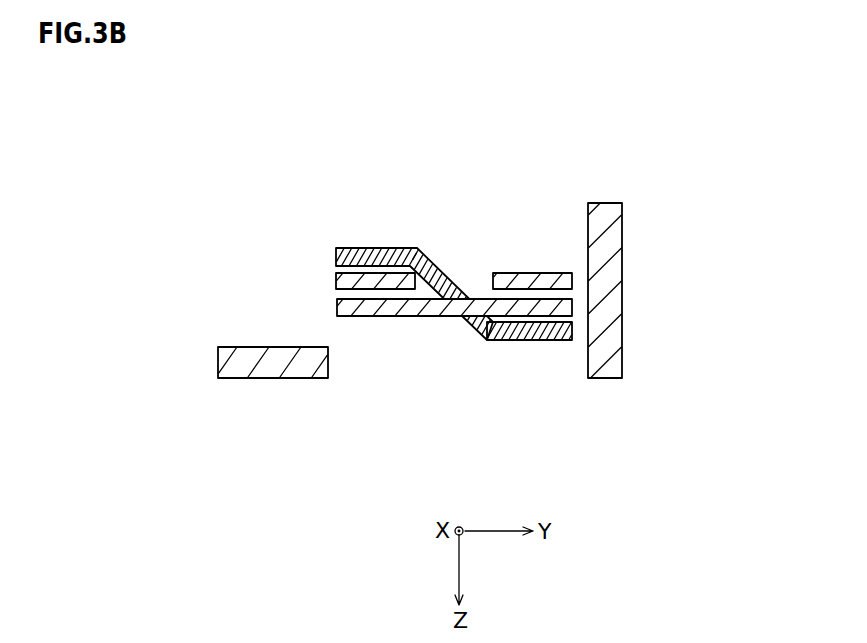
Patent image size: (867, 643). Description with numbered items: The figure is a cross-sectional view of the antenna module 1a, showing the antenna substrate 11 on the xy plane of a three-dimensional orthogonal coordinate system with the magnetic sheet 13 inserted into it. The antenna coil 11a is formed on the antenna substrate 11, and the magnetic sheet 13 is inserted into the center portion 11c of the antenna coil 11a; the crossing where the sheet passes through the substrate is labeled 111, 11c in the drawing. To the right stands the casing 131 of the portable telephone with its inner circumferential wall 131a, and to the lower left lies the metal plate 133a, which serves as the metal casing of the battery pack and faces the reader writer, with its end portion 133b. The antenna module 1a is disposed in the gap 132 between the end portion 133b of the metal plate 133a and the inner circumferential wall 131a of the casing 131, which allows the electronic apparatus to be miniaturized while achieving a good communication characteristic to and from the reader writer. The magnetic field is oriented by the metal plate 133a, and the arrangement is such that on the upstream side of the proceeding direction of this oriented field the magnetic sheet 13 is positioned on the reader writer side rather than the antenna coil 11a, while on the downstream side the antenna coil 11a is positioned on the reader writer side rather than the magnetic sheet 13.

The antenna module 1a is at (464, 106).
The antenna substrate 11 is at (337, 307).
The antenna coil 11a is at (520, 278).
The center portion 11c is at (529, 331).
The through portion 111 is at (457, 313).
The magnetic sheet 13 is at (361, 248).
The casing 131 is at (622, 252).
The inner circumferential wall 131a is at (588, 223).
The gap 132 is at (514, 391).
The metal plate 133a is at (252, 378).
The end portion 133b is at (328, 363).